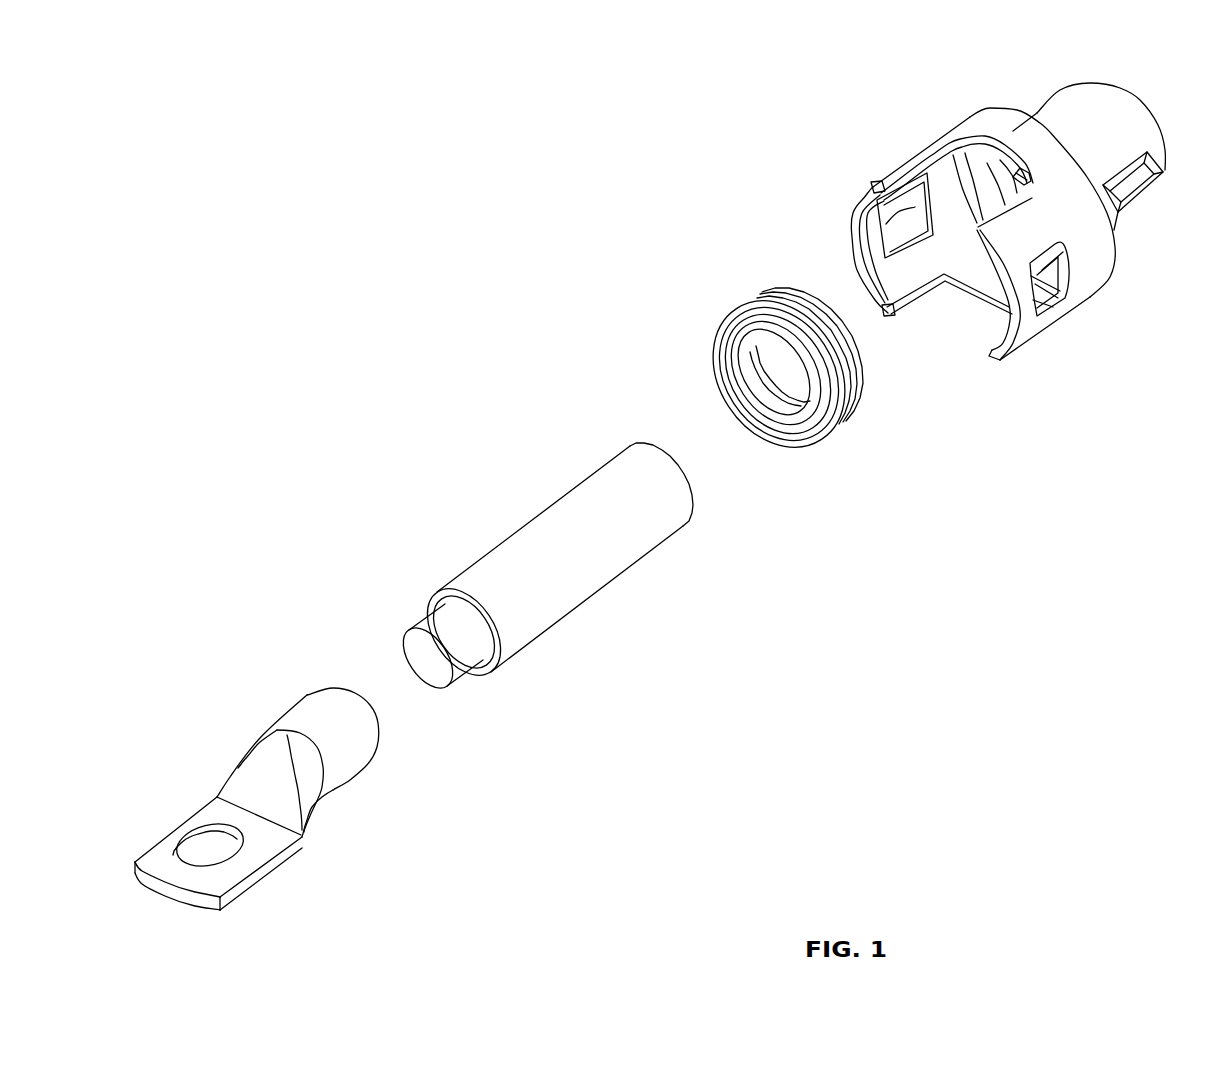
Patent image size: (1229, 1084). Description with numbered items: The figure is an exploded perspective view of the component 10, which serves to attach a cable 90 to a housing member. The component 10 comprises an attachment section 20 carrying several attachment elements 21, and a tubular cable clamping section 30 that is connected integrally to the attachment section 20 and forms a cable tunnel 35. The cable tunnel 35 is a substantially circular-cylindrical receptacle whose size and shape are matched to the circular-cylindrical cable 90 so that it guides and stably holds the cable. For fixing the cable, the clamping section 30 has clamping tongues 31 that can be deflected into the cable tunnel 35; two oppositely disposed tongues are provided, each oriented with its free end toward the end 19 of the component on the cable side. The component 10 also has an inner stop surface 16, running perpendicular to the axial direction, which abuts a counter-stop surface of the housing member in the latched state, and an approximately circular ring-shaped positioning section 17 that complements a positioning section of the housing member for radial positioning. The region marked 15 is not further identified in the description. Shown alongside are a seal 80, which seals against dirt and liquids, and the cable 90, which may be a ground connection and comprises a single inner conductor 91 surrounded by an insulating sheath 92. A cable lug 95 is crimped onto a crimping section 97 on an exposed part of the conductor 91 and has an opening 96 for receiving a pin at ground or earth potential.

The component 10 is at (860, 168).
The clip portion 15 is at (890, 323).
The inner stop surface 16 is at (975, 193).
The positioning section 17 is at (972, 128).
The end of component on the cable side 19 is at (1084, 76).
The attachment section 20 is at (1019, 336).
The attachment elements 21 is at (906, 212).
The cable clamping section 30 is at (1140, 133).
The clamping tongue 31 is at (1130, 192).
The cable tunnel 35 is at (1013, 178).
The seal 80 is at (730, 328).
The cable 90 is at (525, 548).
The inner conductor 91 is at (427, 660).
The sheath 92 is at (598, 497).
The cable lug 95 is at (263, 772).
The opening 96 is at (210, 833).
The crimping section 97 is at (322, 728).